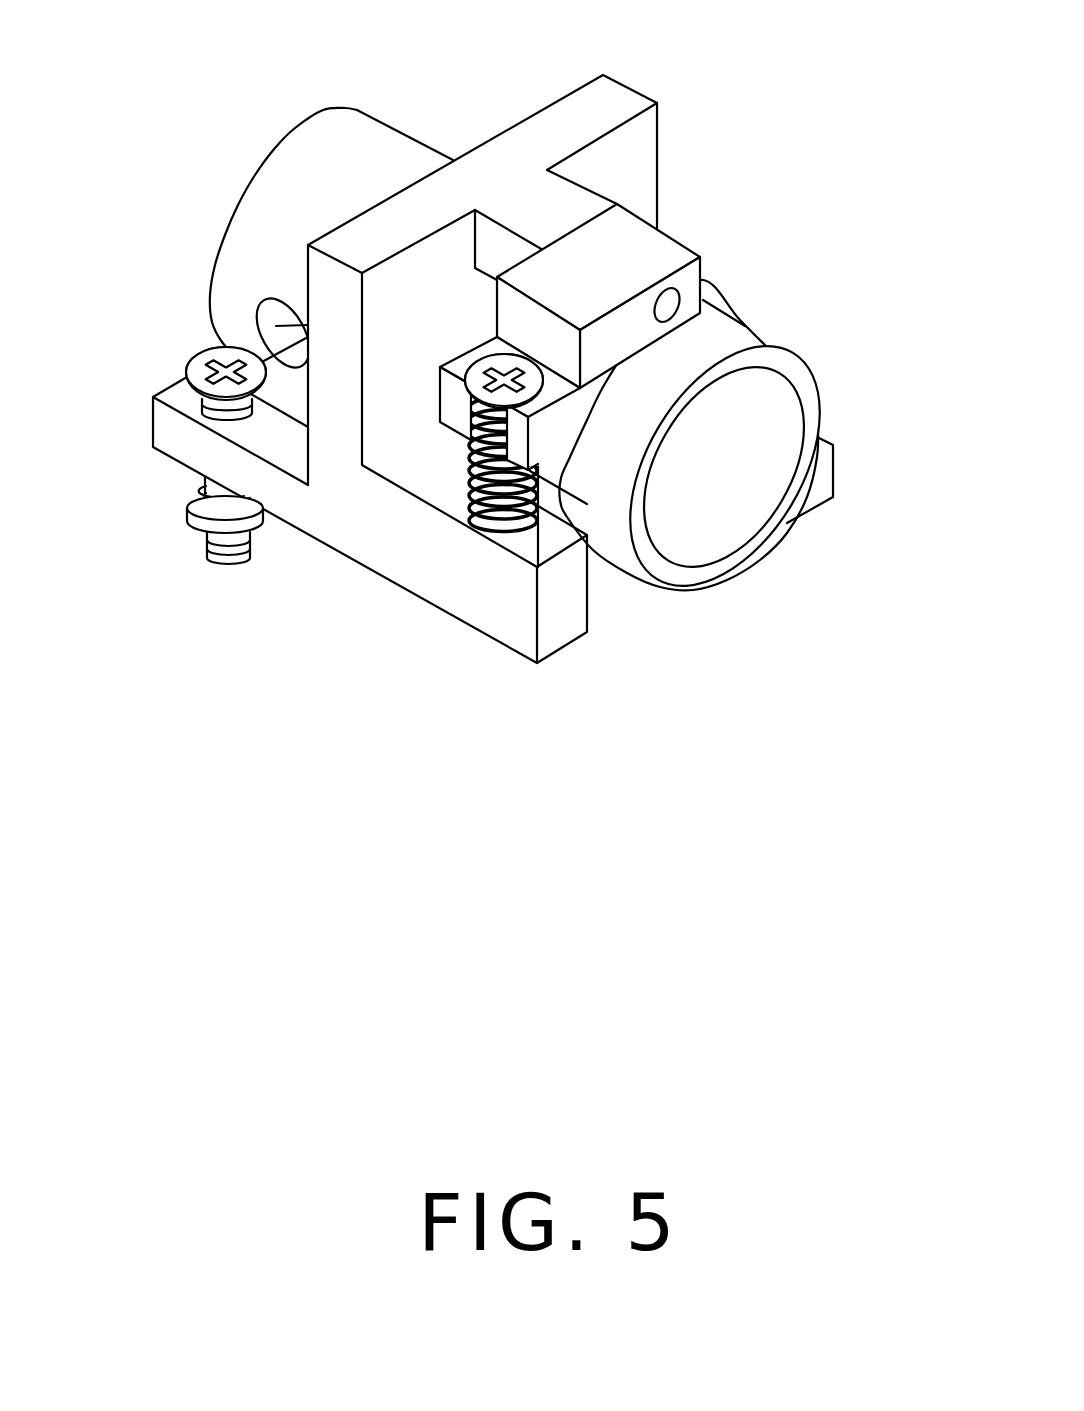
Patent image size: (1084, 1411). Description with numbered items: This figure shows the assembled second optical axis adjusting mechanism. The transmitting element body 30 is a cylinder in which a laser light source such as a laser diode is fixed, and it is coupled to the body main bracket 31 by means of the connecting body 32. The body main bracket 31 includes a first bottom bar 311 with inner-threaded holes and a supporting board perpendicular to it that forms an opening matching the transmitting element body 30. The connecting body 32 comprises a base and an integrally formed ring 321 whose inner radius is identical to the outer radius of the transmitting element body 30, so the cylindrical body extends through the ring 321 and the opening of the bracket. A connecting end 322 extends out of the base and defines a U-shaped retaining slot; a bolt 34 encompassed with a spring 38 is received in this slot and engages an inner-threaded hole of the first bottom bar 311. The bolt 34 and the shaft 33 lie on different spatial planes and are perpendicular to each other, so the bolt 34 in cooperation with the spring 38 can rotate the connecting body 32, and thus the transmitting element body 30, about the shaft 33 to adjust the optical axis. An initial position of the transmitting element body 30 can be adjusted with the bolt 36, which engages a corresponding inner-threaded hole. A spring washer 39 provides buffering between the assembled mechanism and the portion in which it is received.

The transmitting element body 30 is at (705, 343).
The body main bracket 31 is at (493, 334).
The first bottom bar 311 is at (328, 498).
The connecting body 32 is at (677, 276).
The ring 321 is at (703, 293).
The connecting end 322 is at (562, 423).
The shaft 33 is at (670, 303).
The bolt 34 is at (472, 400).
The bolt 36 is at (197, 367).
The spring 38 is at (503, 533).
The spring washer 39 is at (185, 523).